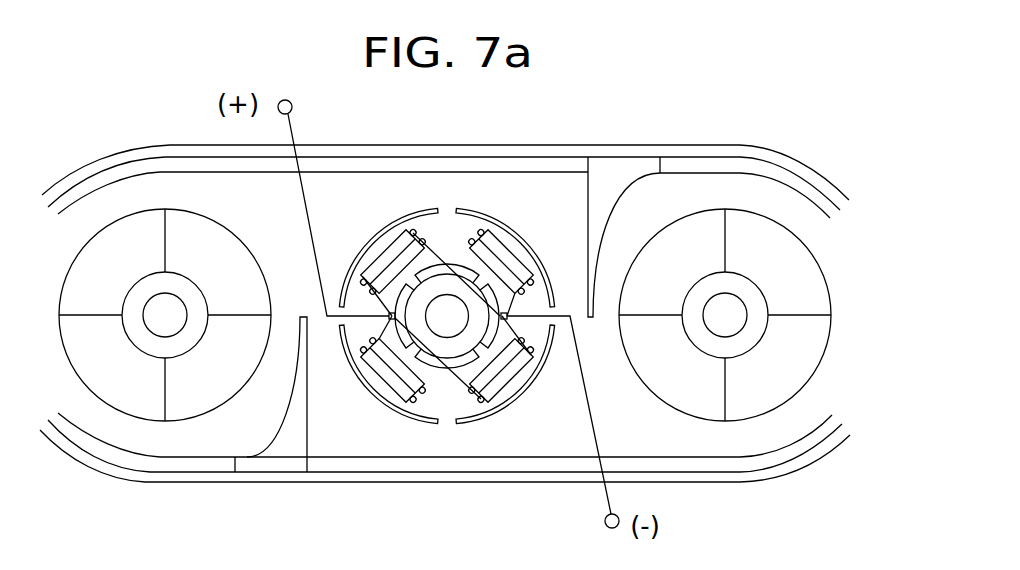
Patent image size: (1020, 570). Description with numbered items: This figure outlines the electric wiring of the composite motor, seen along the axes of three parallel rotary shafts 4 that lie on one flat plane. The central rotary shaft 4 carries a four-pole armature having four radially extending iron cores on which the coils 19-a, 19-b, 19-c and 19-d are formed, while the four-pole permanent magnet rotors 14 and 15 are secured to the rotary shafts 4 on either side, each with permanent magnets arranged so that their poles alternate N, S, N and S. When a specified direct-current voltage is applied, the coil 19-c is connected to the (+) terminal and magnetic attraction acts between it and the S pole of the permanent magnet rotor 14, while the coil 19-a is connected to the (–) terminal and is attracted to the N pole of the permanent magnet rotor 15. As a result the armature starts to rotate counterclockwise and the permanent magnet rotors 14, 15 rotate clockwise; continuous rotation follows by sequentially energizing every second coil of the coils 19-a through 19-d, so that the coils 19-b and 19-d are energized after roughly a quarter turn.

The permanent magnet rotor 14 is at (179, 397).
The permanent magnet rotor 15 is at (737, 398).
The rotary shaft 4 is at (733, 309).
The coil 19-a is at (511, 385).
The coil 19-b is at (383, 383).
The coil 19-c is at (383, 248).
The coil 19-d is at (512, 250).